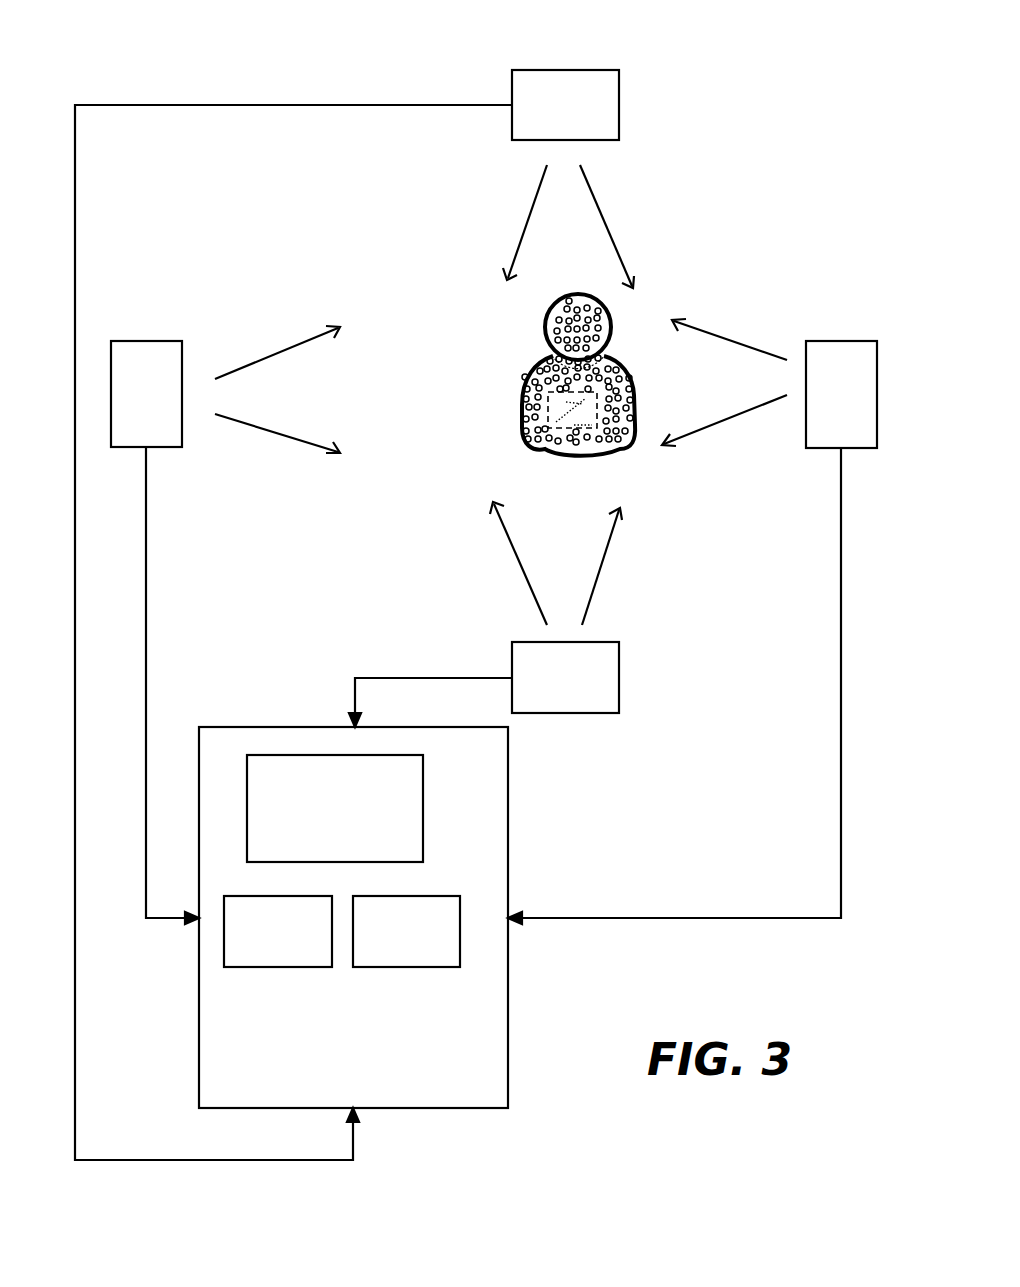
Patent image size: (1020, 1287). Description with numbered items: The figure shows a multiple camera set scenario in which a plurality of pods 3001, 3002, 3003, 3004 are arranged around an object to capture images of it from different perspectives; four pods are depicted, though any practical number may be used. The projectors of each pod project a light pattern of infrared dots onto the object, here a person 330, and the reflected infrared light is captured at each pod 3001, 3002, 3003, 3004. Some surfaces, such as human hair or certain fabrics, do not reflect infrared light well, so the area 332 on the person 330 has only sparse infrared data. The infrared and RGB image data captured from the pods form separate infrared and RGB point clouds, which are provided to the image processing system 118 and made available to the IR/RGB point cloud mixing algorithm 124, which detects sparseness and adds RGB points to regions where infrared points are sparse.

The pod 3001 is at (146, 368).
The pod 3002 is at (568, 77).
The pod 3003 is at (841, 360).
The pod 3004 is at (585, 693).
The person 330 is at (525, 383).
The area 332 is at (560, 415).
The IR/RGB point cloud mixing algorithm 124 is at (410, 835).
The image processing system 118 is at (353, 917).